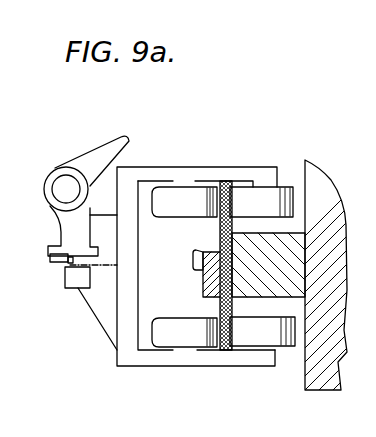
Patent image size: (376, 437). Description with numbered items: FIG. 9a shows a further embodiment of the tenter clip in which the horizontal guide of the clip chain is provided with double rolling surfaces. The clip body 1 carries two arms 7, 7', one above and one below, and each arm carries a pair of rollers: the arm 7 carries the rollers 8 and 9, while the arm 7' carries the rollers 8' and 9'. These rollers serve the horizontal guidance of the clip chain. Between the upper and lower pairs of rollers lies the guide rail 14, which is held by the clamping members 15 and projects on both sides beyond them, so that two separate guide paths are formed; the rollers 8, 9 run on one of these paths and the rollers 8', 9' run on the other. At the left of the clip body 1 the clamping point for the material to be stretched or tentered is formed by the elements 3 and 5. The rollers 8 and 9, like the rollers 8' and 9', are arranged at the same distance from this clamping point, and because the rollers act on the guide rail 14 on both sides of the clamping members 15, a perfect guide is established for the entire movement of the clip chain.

The clip body 1 is at (128, 312).
The clamping element 3 is at (50, 256).
The clamping element 5 is at (63, 275).
The arm 7 is at (226, 238).
The arm 7' is at (206, 379).
The roller 8 is at (184, 177).
The roller 8' is at (182, 357).
The roller 9 is at (261, 175).
The roller 9' is at (262, 357).
The guide rail 14 is at (218, 278).
The clamping member 15 is at (210, 240).